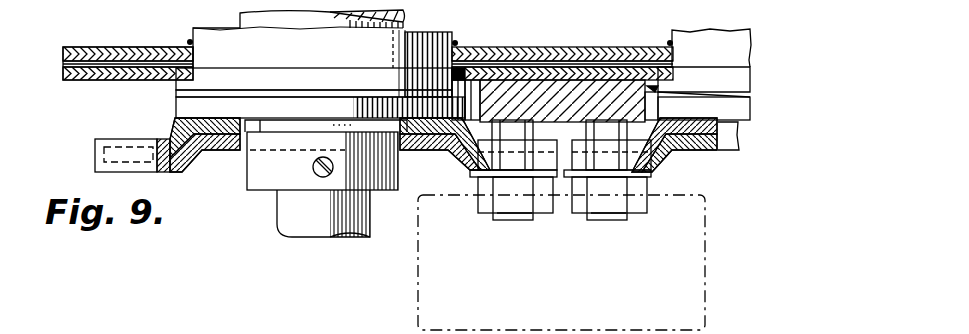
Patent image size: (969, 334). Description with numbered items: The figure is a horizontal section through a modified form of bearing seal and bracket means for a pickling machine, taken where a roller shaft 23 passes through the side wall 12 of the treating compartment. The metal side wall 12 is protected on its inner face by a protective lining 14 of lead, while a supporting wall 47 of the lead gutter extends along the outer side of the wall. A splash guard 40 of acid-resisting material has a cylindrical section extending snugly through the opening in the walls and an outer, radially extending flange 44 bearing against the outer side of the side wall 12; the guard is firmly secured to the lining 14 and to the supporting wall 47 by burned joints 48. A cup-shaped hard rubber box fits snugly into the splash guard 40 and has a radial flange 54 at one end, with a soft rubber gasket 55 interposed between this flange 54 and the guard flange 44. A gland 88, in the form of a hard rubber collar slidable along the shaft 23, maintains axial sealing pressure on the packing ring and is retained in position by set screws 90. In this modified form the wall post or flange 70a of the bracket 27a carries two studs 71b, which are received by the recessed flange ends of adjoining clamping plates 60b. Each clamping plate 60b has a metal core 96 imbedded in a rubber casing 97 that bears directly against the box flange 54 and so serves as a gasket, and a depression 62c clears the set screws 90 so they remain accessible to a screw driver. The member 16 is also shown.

The side wall 12 is at (63, 62).
The protective lining 14 is at (108, 48).
The supporting wall 47 is at (82, 78).
The burned joint 48 is at (187, 42).
The element 16 is at (298, 22).
The flange 44 is at (230, 76).
The soft rubber gasket 55 is at (316, 95).
The flange 54 is at (184, 105).
The splash guard 40 is at (410, 32).
The wall post or flange 70a is at (563, 90).
The bracket 27a is at (655, 88).
The depression 62c is at (454, 157).
The metal core 96 is at (190, 163).
The casing 97 is at (172, 175).
The clamping plate 60b is at (88, 153).
The gland 88 is at (257, 178).
The set screw 90 is at (313, 168).
The roller shaft 23 is at (302, 226).
The stud 71b is at (500, 218).